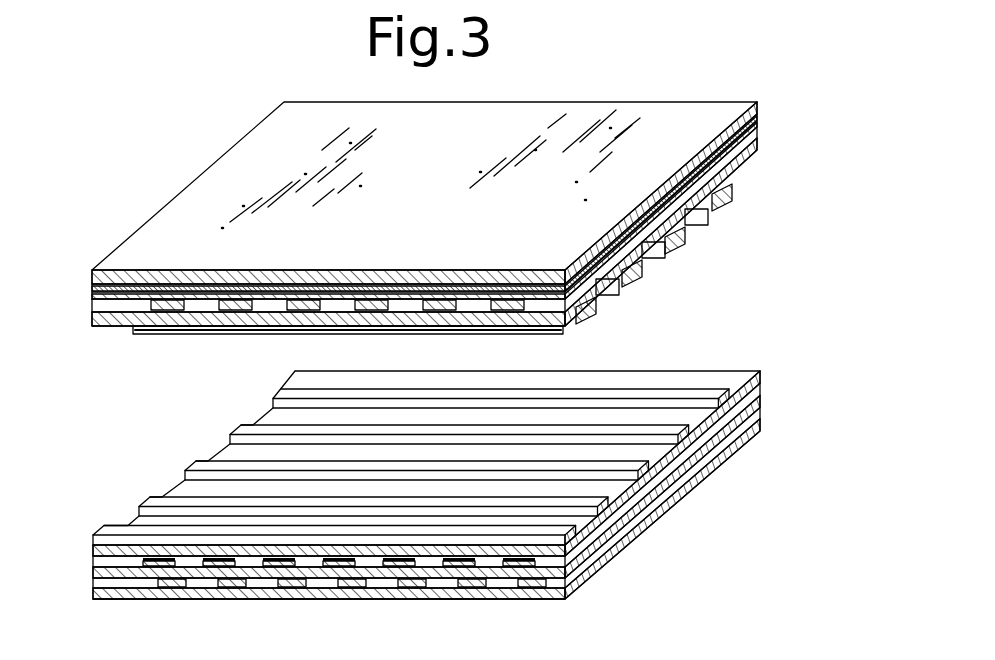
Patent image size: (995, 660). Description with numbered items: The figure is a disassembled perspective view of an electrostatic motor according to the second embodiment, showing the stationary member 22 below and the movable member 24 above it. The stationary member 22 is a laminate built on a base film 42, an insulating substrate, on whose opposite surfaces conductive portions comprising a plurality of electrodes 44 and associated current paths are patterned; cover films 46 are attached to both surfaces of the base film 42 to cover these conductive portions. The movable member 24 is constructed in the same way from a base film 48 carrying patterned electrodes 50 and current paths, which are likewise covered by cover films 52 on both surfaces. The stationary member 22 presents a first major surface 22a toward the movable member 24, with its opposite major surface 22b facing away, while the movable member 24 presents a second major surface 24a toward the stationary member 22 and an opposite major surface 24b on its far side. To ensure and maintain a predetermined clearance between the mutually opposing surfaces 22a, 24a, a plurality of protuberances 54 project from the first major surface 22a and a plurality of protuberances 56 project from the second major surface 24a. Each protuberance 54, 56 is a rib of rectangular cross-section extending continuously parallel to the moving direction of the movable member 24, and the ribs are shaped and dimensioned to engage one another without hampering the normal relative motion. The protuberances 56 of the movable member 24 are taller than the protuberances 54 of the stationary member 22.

The stationary member 22 is at (150, 457).
The first major surface 22a is at (138, 512).
The lower surface of lower panel 22b is at (132, 601).
The movable member 24 is at (163, 173).
The second major surface 24a is at (112, 328).
The upper surface of upper panel 24b is at (150, 247).
The base film 42 is at (760, 398).
The electrodes 44 is at (406, 598).
The cover films 46 is at (760, 374).
The base film 48 is at (757, 124).
The electrodes 50 is at (292, 328).
The cover films 52 is at (757, 106).
The protuberances 54 is at (630, 548).
The protuberances 56 is at (642, 312).